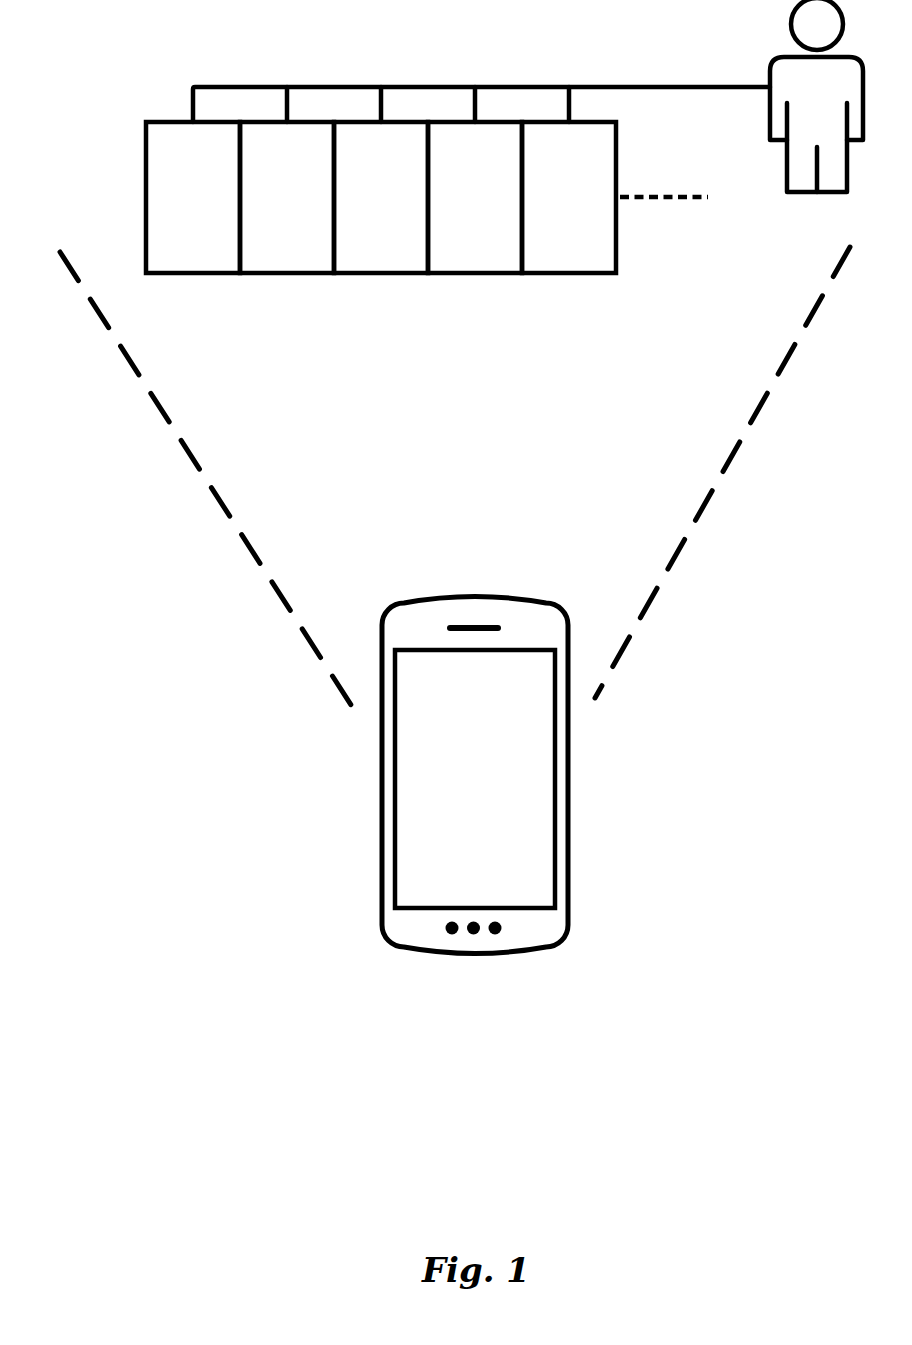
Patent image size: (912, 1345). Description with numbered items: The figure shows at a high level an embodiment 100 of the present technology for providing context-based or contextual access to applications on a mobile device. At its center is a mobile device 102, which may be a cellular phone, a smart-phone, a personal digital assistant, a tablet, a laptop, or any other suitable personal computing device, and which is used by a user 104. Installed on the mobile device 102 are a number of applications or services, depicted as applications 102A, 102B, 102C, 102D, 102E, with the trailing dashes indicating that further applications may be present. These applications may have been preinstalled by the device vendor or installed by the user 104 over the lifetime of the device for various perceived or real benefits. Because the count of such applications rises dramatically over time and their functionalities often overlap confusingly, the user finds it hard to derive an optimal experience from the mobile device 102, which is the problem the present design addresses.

The embodiment 100 is at (461, 605).
The mobile device 102 is at (453, 788).
The application 102A is at (226, 246).
The application 102B is at (320, 246).
The application 102C is at (414, 246).
The application 102D is at (508, 246).
The application 102E is at (602, 246).
The user 104 is at (798, 96).